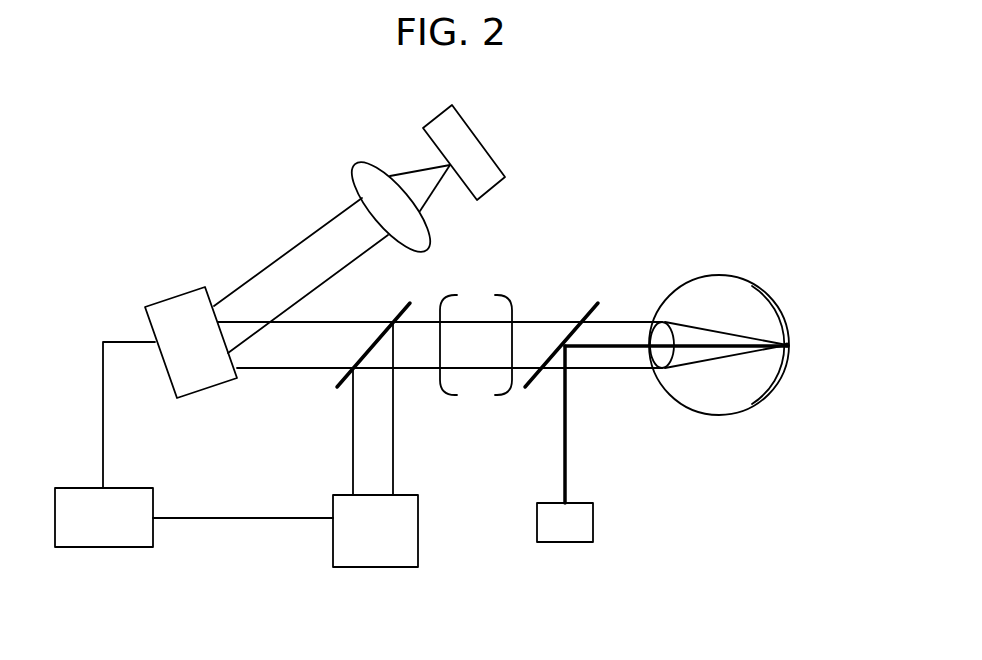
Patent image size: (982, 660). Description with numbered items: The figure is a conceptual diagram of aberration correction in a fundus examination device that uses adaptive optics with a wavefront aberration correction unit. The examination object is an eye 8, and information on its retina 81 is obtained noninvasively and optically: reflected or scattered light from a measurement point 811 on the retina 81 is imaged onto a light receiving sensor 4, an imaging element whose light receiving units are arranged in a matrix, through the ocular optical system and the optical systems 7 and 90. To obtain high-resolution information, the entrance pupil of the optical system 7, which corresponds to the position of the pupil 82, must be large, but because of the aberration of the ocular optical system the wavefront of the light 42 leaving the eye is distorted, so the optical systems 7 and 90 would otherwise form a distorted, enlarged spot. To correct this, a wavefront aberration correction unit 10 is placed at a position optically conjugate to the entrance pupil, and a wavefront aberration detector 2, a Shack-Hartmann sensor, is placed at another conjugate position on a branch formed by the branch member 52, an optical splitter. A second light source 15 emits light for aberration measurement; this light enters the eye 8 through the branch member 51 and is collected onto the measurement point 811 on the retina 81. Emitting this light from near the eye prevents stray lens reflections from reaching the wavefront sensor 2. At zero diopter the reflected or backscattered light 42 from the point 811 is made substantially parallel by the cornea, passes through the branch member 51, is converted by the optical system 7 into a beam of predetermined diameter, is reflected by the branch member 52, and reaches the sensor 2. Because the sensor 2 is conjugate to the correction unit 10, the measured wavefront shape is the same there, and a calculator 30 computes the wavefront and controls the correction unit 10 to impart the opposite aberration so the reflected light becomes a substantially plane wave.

The wavefront aberration detector 2 is at (375, 562).
The light receiving sensor 4 is at (470, 142).
The optical system 7 is at (472, 367).
The eye 8 is at (740, 278).
The wavefront aberration correction unit 10 is at (173, 302).
The second light source 15 is at (588, 522).
The calculator 30 is at (90, 542).
The light 42 is at (318, 227).
The branch member 51 is at (587, 310).
The branch member 52 is at (400, 306).
The retina 81 is at (767, 385).
The measurement point 811 is at (790, 343).
The pupil 82 is at (648, 337).
The optical system 90 is at (368, 165).